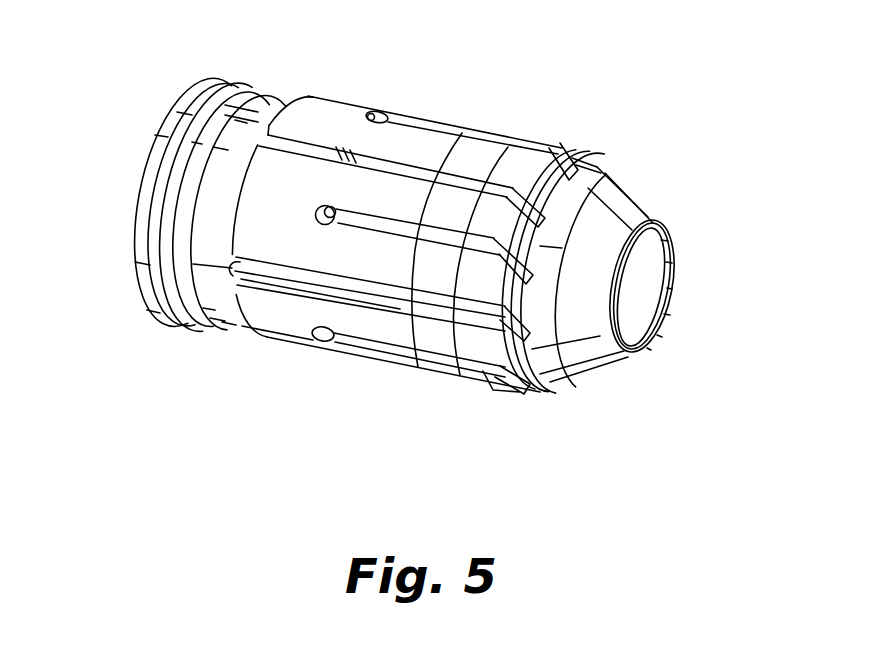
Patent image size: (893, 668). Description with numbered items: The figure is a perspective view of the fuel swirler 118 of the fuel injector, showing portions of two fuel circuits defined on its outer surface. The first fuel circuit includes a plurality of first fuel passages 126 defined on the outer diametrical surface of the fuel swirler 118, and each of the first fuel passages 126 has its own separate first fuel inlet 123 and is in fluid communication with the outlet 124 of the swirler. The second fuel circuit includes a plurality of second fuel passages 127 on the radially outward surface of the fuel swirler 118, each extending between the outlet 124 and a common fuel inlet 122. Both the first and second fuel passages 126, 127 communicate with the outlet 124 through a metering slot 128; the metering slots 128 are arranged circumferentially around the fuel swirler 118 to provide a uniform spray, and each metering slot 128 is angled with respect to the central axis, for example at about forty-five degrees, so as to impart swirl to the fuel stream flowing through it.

The fuel swirler 118 is at (648, 193).
The common fuel inlet 122 is at (217, 207).
The first fuel inlet 123 is at (325, 205).
The outlet 124 is at (600, 163).
The first fuel passages 126 is at (435, 130).
The second fuel passages 127 is at (260, 100).
The metering slot 128 is at (557, 143).